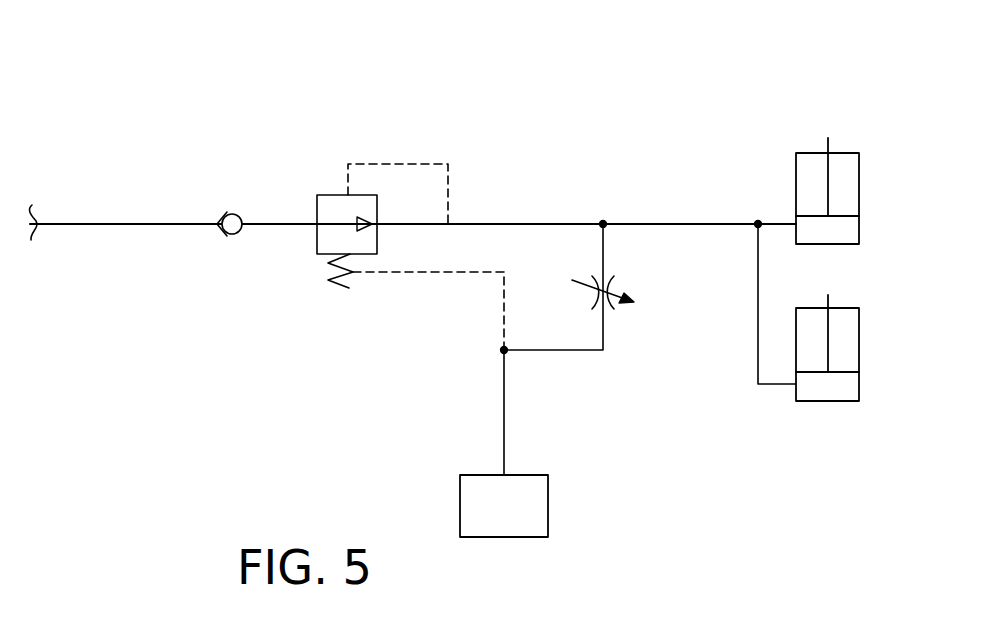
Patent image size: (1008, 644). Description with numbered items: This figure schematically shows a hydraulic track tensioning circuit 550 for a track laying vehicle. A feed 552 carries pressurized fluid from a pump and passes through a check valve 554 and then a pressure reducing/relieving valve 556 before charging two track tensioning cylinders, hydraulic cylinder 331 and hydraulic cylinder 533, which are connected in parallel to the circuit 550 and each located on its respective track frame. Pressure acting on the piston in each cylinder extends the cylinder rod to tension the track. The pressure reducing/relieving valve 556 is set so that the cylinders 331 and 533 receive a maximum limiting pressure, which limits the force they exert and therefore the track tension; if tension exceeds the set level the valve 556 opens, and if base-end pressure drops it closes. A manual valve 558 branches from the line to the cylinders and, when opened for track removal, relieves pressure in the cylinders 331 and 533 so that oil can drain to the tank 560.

The hydraulic track tensioning circuit 550 is at (573, 132).
The feed 552 is at (34, 213).
The check valve 554 is at (226, 212).
The pressure reducing/relieving valve 556 is at (316, 234).
The manual valve 558 is at (608, 286).
The tank 560 is at (549, 510).
The hydraulic cylinder 331 is at (860, 190).
The hydraulic cylinder 533 is at (860, 345).